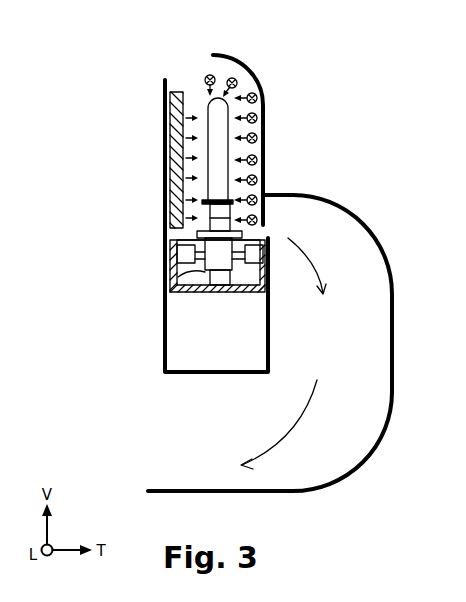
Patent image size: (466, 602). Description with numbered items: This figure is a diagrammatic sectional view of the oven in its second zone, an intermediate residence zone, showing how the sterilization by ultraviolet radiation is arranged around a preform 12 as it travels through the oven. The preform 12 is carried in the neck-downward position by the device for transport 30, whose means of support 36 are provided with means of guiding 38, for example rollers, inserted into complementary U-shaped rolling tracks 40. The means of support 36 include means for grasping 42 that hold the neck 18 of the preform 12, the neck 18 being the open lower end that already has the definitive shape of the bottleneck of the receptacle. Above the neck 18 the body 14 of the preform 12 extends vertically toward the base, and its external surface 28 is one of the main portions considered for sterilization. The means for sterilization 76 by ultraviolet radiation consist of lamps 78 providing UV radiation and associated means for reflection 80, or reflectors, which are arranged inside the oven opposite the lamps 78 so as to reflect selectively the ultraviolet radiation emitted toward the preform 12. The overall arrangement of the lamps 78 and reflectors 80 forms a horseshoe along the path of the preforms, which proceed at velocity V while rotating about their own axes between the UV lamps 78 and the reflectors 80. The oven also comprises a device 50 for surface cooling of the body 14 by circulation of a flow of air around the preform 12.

The preform 12 is at (216, 108).
The body 14 is at (220, 172).
The neck 18 is at (270, 210).
The external surface 28 is at (214, 155).
The device for transport 30 is at (172, 282).
The means of support 36 is at (212, 264).
The means of guiding 38 is at (250, 256).
The rolling tracks 40 is at (242, 292).
The means for grasping 42 is at (243, 210).
The device for cooling 50 is at (353, 405).
The means for sterilization 76 is at (274, 96).
The lamps 78 is at (263, 118).
The means for reflection 80 is at (178, 118).